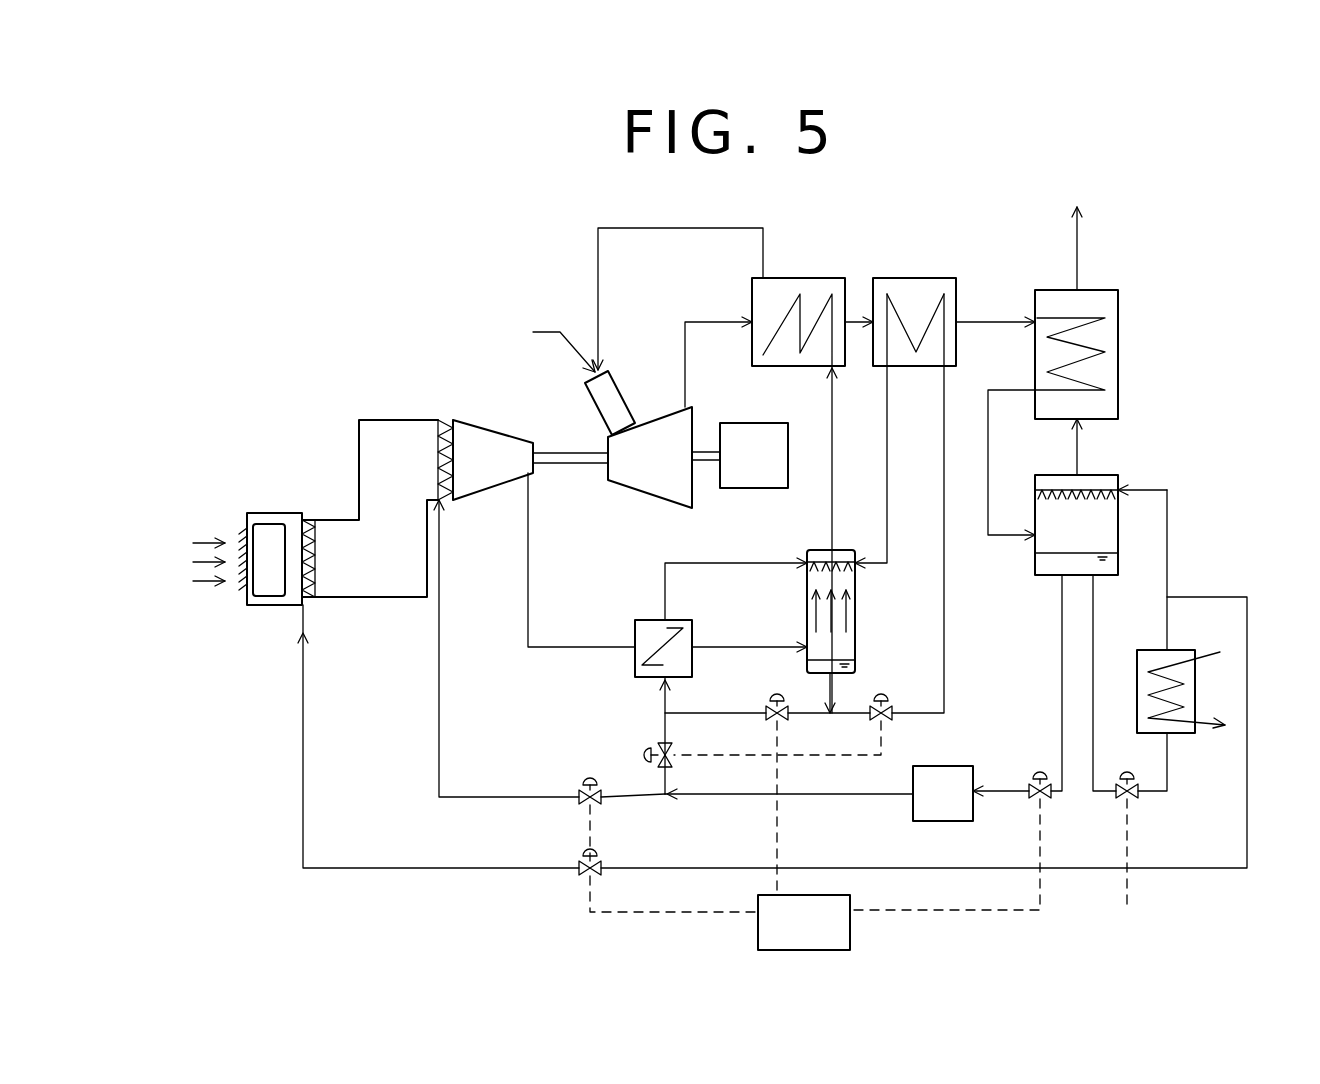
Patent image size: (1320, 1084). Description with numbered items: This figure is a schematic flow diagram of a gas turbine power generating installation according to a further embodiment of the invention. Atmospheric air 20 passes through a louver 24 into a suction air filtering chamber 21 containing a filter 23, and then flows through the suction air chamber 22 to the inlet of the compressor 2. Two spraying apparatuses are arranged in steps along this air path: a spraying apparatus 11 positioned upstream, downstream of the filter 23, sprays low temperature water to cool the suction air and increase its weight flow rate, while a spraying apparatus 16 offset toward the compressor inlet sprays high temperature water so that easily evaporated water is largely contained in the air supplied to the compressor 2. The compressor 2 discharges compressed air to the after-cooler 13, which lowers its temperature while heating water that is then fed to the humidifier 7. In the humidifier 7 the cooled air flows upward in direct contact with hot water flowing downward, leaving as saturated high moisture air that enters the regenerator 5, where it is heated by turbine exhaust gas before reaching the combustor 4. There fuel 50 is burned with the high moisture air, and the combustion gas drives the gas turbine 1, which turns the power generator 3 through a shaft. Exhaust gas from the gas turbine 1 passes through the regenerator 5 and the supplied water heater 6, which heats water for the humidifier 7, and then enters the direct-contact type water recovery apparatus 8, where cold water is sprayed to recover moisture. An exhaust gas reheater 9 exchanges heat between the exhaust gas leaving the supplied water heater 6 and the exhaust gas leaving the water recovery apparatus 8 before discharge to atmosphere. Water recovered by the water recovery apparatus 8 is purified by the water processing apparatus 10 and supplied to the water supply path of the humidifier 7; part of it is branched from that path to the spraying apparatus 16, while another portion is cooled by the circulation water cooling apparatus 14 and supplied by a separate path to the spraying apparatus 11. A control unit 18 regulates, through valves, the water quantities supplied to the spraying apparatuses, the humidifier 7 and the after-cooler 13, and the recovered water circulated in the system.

The gas turbine 1 is at (664, 457).
The compressor 2 is at (530, 460).
The power generator 3 is at (754, 455).
The combustor 4 is at (603, 400).
The regenerator 5 is at (798, 304).
The supplied water heater 6 is at (914, 304).
The humidifier 7 is at (845, 611).
The water recovery apparatus 8 is at (1076, 525).
The exhaust gas reheater 9 is at (1089, 354).
The water processing apparatus 10 is at (943, 793).
The spraying apparatus 11 is at (316, 580).
The after-cooler 13 is at (658, 630).
The circulation water cooling apparatus 14 is at (1181, 709).
The spraying apparatus 16 is at (443, 503).
The control unit 18 is at (804, 922).
The air 20 is at (205, 543).
The suction air filtering chamber 21 is at (285, 600).
The suction air chamber 22 is at (370, 508).
The filter 23 is at (267, 532).
The louver 24 is at (243, 588).
The fuel 50 is at (542, 335).